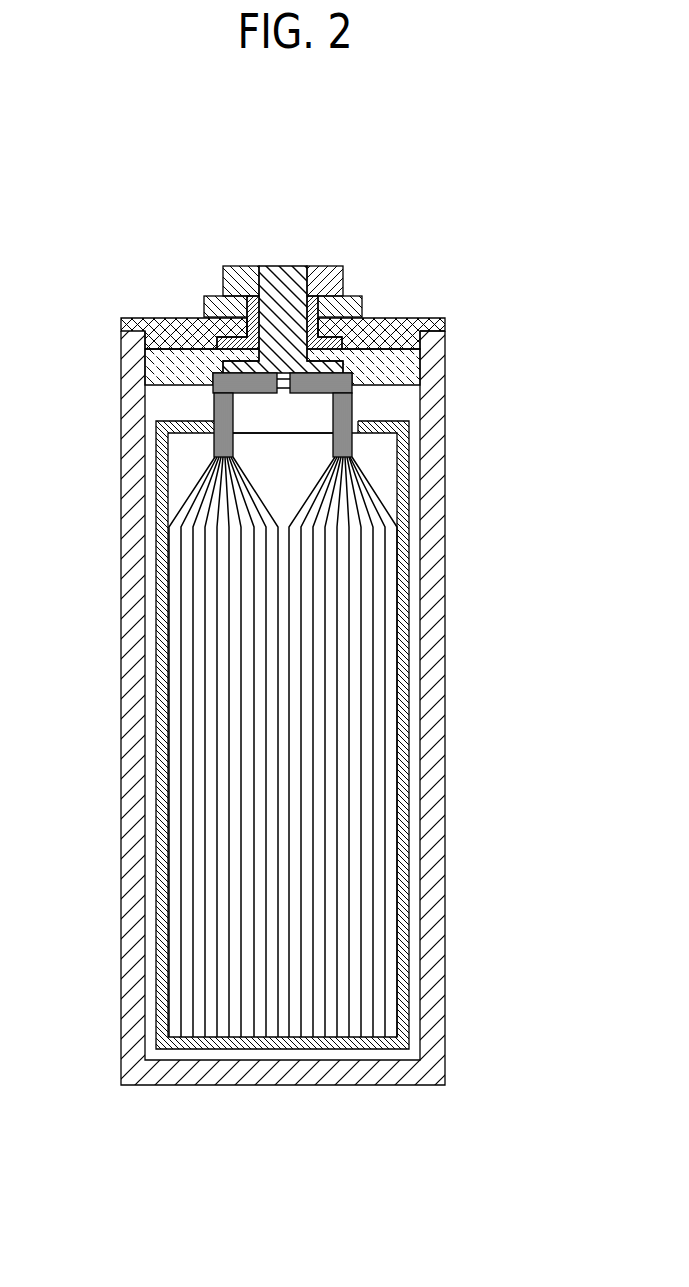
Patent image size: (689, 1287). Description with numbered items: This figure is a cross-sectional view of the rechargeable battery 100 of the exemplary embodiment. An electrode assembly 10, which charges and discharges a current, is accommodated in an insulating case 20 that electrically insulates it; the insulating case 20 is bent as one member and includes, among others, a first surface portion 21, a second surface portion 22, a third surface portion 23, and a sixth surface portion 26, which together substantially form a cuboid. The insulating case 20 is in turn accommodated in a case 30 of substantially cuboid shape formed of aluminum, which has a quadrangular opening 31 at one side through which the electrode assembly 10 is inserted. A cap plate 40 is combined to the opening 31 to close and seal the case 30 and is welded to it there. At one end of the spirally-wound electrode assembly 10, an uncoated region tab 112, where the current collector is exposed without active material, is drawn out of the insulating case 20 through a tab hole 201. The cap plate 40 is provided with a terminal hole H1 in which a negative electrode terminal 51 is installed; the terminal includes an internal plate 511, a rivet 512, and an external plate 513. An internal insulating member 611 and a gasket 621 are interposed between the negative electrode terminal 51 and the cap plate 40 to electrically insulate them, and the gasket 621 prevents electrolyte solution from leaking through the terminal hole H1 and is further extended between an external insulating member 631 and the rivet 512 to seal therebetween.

The rechargeable battery 100 is at (441, 205).
The electrode assembly 10 is at (382, 467).
The uncoated region tab 112 is at (301, 390).
The insulating case 20 is at (284, 767).
The first surface portion 21 is at (177, 428).
The second surface portion 22 is at (160, 832).
The third surface portion 23 is at (405, 832).
The sixth surface portion 26 is at (362, 1042).
The tab hole 201 is at (313, 427).
The case 30 is at (455, 655).
The opening 31 is at (412, 320).
The cap plate 40 is at (168, 333).
The negative electrode terminal 51 is at (230, 196).
The internal plate 511 is at (318, 370).
The rivet 512 is at (285, 300).
The external plate 513 is at (322, 275).
The internal insulating member 611 is at (403, 367).
The gasket 621 is at (338, 342).
The external insulating member 631 is at (352, 318).
The terminal hole H1 is at (265, 322).